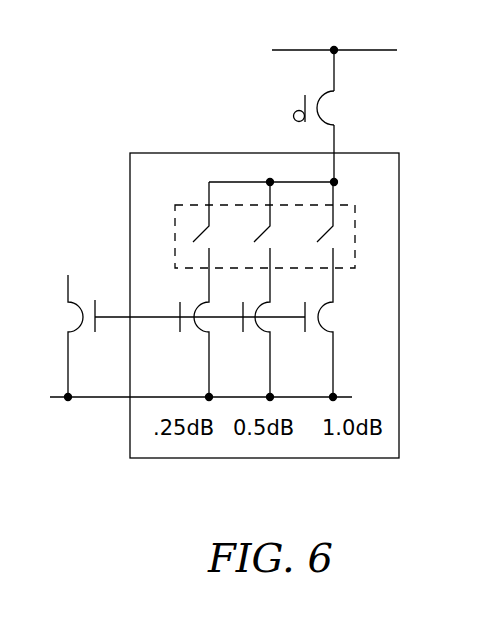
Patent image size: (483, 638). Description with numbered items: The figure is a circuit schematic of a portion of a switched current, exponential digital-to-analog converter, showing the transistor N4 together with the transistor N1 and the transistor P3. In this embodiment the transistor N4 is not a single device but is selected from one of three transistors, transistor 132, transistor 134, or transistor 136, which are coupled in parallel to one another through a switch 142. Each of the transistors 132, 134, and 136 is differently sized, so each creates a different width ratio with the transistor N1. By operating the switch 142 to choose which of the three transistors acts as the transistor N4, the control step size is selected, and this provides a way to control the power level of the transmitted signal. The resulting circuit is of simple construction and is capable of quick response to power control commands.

The transistor 132 is at (197, 340).
The transistor 134 is at (265, 338).
The transistor 136 is at (333, 303).
The switch 142 is at (198, 204).
The transistor N1 is at (108, 312).
The transistor N4 is at (230, 170).
The transistor P3 is at (332, 136).